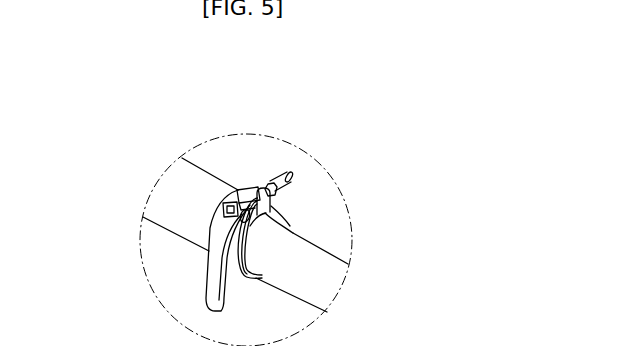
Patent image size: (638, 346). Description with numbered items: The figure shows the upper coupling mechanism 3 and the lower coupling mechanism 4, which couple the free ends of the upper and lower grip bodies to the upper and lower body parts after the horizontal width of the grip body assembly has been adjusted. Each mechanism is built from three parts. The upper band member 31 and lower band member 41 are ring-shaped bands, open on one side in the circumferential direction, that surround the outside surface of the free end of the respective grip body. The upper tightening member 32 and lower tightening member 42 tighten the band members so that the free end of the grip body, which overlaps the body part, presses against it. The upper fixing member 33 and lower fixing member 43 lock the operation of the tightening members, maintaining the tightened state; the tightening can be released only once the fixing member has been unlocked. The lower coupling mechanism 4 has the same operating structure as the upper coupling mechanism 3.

The upper coupling mechanism 3 is at (222, 149).
The lower coupling mechanism 4 is at (236, 164).
The upper band member 31 is at (290, 235).
The lower band member 41 is at (283, 232).
The upper tightening member 32 is at (153, 250).
The lower tightening member 42 is at (207, 286).
The upper fixing member 33 is at (310, 154).
The lower fixing member 43 is at (268, 181).